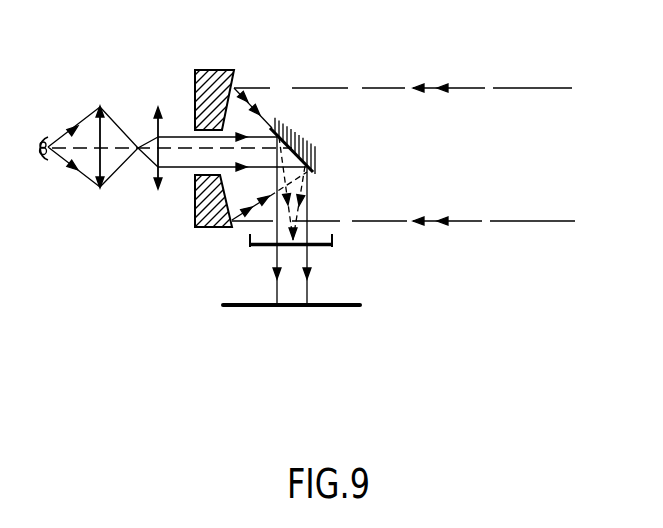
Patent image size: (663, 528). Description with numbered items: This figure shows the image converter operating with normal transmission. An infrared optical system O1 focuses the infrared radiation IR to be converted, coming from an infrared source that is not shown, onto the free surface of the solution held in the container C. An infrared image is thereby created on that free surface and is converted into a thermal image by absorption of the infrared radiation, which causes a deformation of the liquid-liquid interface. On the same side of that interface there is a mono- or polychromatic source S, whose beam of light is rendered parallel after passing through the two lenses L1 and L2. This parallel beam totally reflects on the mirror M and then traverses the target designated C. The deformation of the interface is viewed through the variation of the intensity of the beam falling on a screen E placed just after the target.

The mono- or polychromatic source S is at (46, 128).
The lens L1 is at (102, 130).
The lens L2 is at (163, 131).
The infrared optical system O1 is at (217, 232).
The mirror M is at (313, 148).
The target (container) C is at (322, 262).
The screen E is at (345, 305).
The infrared radiation IR is at (403, 154).